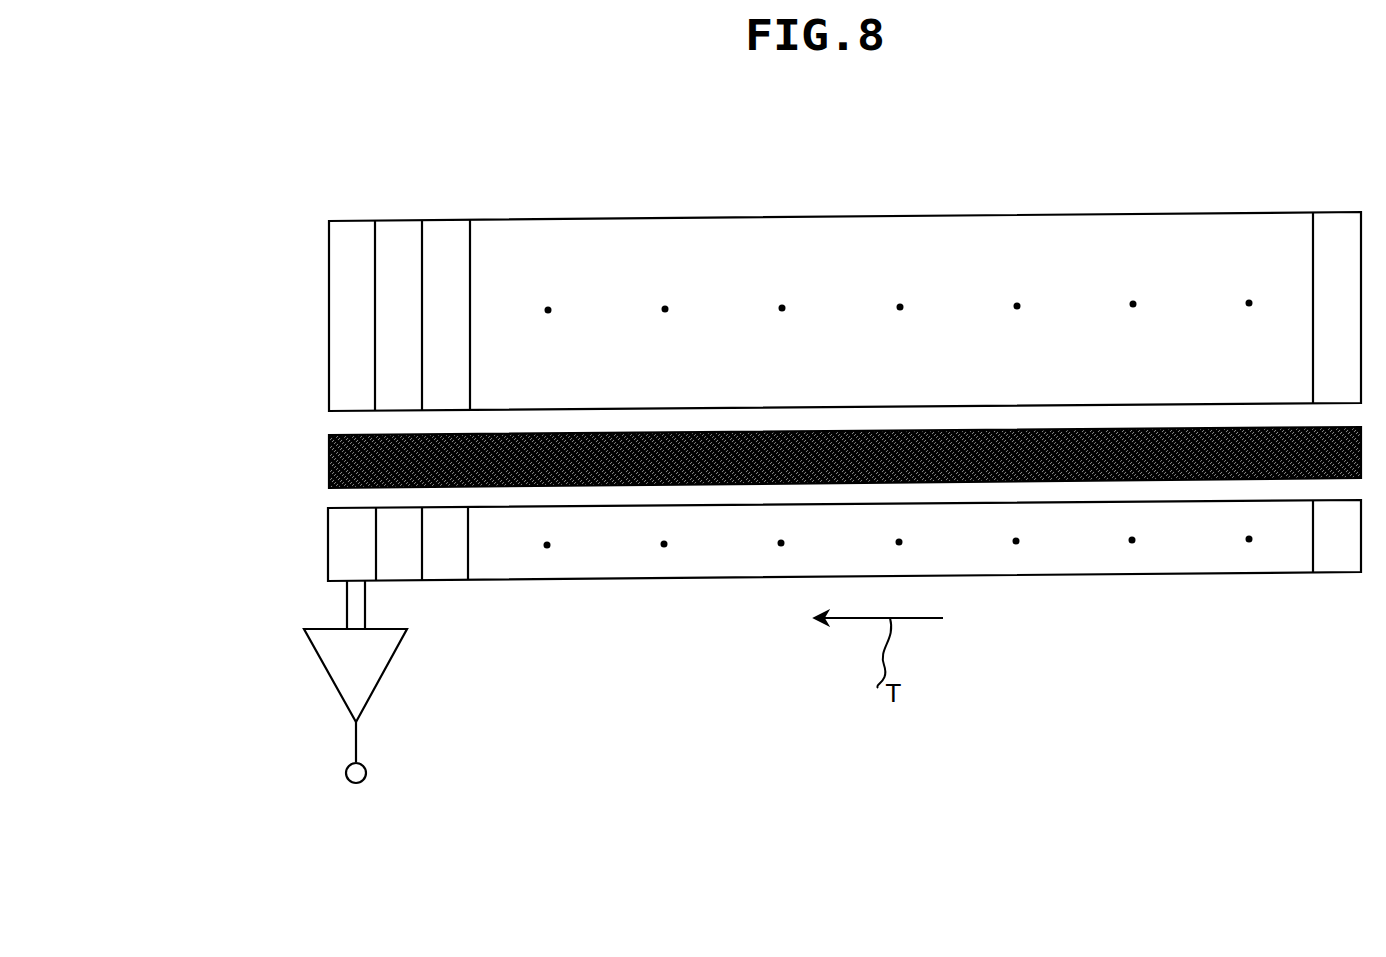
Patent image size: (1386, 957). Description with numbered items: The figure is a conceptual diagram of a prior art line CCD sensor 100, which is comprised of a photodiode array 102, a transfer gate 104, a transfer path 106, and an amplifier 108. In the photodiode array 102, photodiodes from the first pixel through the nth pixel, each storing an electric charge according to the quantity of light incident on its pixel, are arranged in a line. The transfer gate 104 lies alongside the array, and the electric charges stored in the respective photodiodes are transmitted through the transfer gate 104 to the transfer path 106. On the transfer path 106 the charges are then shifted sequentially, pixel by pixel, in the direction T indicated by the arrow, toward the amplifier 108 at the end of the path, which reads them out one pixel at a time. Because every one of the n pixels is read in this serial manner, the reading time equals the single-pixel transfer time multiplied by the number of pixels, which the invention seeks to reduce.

The line CCD sensor 100 is at (957, 183).
The photodiode array 102 is at (317, 283).
The transfer gate 104 is at (318, 465).
The transfer path 106 is at (322, 558).
The amplifier 108 is at (323, 683).